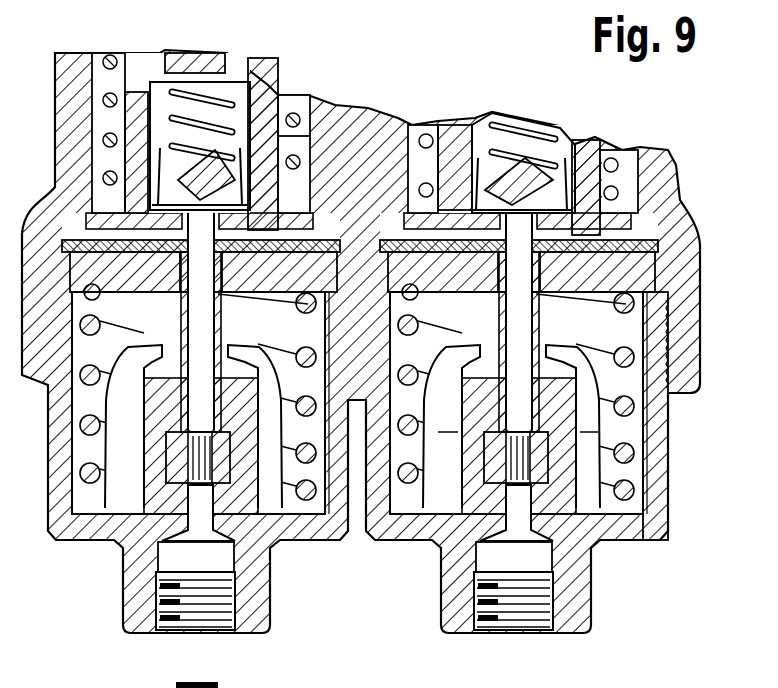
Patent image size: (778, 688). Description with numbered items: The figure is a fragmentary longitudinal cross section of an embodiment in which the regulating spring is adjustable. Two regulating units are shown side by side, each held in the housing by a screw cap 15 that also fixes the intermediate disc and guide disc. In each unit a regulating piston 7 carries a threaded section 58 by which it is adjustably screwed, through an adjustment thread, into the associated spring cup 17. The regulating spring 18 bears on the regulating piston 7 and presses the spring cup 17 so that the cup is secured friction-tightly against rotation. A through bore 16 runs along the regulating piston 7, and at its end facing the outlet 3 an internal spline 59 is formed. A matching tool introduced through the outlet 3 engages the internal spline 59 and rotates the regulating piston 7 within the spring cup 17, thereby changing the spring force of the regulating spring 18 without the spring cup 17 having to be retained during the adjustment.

The outlet 3 is at (520, 625).
The regulating piston 7 is at (640, 378).
The screw cap 15 is at (627, 535).
The through bore 16 is at (527, 298).
The spring cup 17 is at (662, 426).
The regulating spring 18 is at (613, 465).
The threaded section 58 is at (560, 335).
The internal spline 59 is at (488, 505).